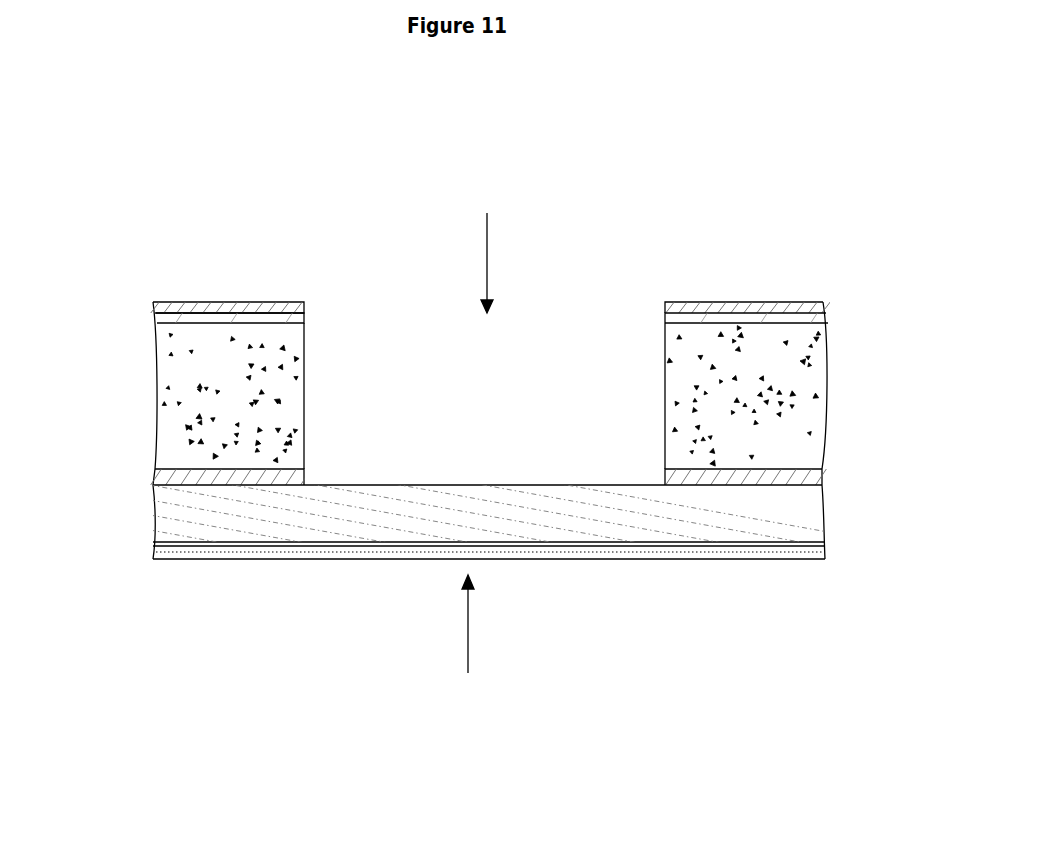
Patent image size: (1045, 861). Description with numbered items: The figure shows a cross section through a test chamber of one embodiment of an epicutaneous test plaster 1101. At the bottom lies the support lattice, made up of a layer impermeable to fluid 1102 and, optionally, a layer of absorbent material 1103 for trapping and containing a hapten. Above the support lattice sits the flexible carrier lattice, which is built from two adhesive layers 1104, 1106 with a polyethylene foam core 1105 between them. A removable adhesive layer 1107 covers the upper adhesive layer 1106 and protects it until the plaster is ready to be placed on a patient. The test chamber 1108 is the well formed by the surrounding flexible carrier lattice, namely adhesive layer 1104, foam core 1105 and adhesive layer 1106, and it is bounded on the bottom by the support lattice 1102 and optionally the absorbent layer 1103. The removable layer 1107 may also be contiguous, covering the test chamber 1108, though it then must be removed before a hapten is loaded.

The epicutaneous test plaster 1101 is at (466, 638).
The layer impermeable to fluid 1102 is at (177, 549).
The layer of absorbent material 1103 is at (807, 514).
The adhesive layer 1104 is at (163, 477).
The polyethylene foam core 1105 is at (177, 385).
The adhesive layer 1106 is at (157, 321).
The removable adhesive layer 1107 is at (172, 310).
The test chamber 1108 is at (486, 248).